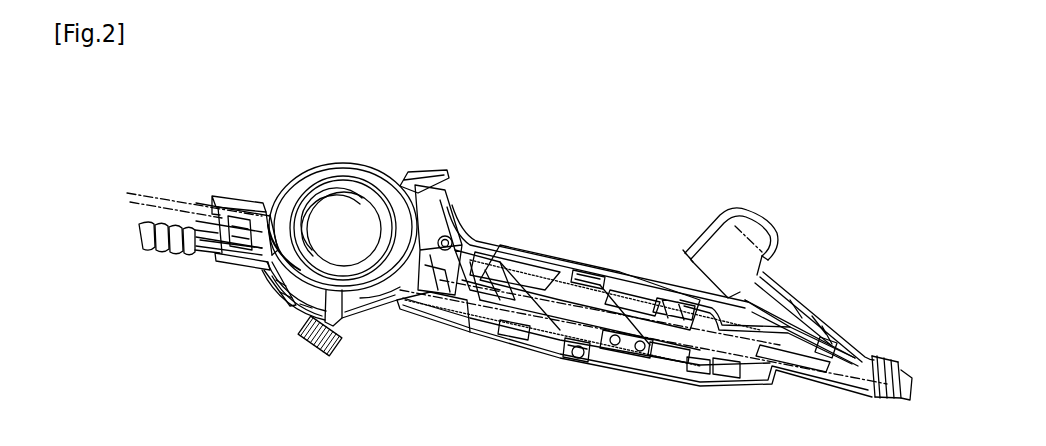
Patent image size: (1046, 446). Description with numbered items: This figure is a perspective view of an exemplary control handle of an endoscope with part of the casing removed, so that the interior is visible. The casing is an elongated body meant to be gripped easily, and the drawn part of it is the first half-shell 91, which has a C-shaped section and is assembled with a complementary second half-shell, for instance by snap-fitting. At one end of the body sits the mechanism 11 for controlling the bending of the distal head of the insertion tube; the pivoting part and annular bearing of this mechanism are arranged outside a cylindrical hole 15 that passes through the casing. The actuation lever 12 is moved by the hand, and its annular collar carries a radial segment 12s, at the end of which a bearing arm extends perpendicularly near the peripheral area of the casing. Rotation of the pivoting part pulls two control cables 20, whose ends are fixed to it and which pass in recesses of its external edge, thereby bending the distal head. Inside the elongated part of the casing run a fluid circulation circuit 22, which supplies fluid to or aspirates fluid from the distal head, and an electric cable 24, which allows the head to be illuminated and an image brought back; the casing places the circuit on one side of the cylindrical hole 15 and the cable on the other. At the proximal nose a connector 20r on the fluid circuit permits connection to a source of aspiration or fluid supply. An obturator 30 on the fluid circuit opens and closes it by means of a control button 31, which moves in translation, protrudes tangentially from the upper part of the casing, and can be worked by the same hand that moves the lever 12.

The mechanism for controlling the bending of the distal head 11 is at (355, 161).
The cylindrical hole 15 is at (351, 251).
The connector on the fluid circulation circuit 20r is at (180, 247).
The electric cable 24 is at (258, 210).
The radial segment 12s is at (300, 306).
The actuation lever 12 is at (331, 345).
The control button 31 is at (418, 170).
The obturator 30 is at (447, 208).
The fluid circulation circuit 22 is at (510, 260).
The first half-shell 91 is at (544, 266).
The control cables 20 is at (606, 292).